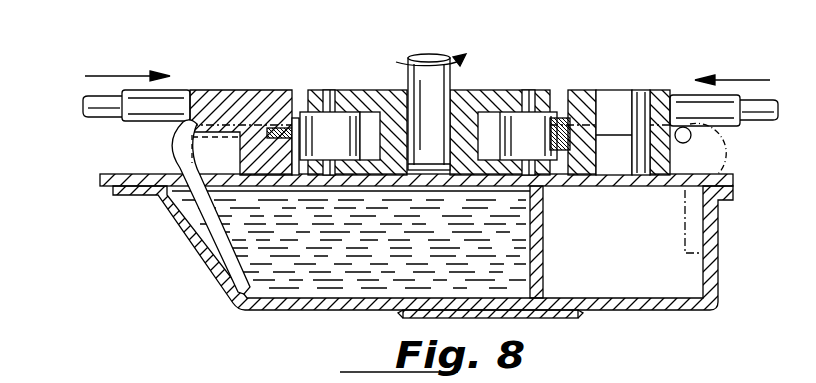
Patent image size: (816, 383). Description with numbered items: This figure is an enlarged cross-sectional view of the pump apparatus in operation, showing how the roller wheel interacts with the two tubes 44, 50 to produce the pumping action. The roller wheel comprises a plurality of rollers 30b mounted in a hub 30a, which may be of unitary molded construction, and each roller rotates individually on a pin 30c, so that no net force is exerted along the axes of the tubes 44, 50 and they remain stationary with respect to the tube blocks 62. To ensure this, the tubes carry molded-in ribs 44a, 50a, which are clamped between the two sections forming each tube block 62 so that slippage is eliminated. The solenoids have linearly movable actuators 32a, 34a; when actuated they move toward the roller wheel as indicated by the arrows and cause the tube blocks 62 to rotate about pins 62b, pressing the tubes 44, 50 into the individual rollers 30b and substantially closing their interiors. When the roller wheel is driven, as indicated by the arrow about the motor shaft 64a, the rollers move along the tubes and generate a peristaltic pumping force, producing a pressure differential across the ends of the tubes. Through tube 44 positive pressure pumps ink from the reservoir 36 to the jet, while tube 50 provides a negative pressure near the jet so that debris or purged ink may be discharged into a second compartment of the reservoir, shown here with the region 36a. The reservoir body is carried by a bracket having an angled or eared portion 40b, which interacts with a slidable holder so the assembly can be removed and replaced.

The hub 30a is at (368, 92).
The rollers 30b is at (339, 120).
The pins 30c is at (327, 96).
The linearly movable actuator 32a is at (140, 106).
The linearly movable actuator 34a is at (678, 100).
The reservoir 36 is at (378, 268).
The second compartment 36a is at (655, 223).
The angled or eared portion of bracket 40b is at (562, 315).
The tube 44 is at (297, 124).
The molded-in rib 44a is at (275, 128).
The tube 50 is at (563, 120).
The molded-in rib 50a is at (580, 128).
The tube block 62 is at (212, 100).
The pin 62b is at (642, 100).
The motor shaft 64a is at (423, 62).